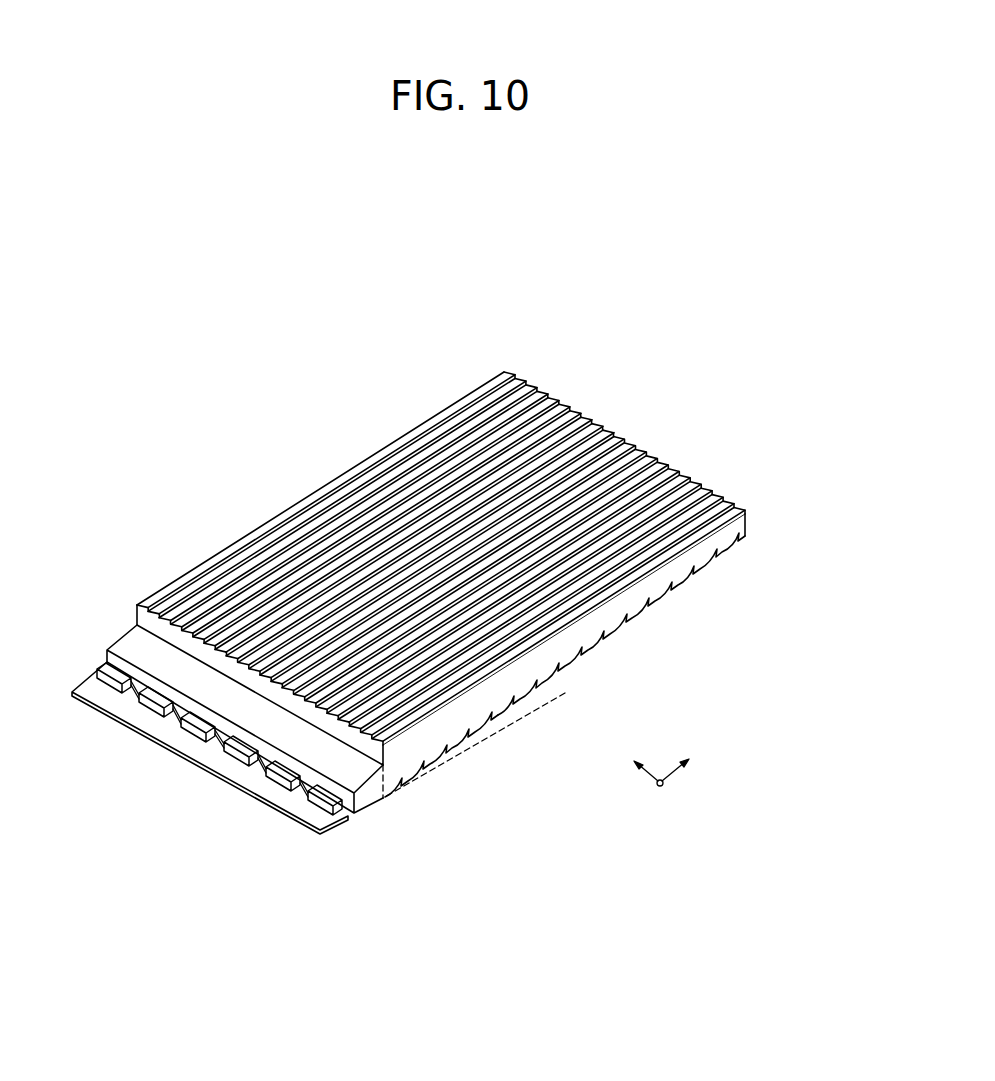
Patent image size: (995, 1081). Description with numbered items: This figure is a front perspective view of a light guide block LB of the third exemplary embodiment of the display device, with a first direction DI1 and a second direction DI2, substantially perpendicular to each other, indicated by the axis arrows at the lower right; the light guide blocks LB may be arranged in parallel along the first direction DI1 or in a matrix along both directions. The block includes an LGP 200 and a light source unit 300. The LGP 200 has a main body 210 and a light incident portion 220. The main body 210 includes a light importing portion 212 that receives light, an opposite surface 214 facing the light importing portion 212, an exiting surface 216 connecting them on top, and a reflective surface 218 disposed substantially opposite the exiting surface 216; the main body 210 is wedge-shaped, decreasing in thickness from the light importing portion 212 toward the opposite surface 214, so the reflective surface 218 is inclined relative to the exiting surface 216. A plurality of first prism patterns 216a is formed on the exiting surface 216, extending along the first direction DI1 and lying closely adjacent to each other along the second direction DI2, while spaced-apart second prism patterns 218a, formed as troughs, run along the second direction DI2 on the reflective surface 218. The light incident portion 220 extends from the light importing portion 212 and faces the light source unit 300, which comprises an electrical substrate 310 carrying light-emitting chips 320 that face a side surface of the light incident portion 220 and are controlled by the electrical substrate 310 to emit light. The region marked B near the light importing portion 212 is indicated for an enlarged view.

The light guide block LB is at (638, 403).
The LGP 200 is at (47, 560).
The main body 210 is at (135, 617).
The light importing portion 212 is at (393, 776).
The opposite surface 214 is at (756, 518).
The exiting surface 216 is at (650, 589).
The first prism pattern 216a is at (356, 496).
The reflective surface 218 is at (608, 652).
The second prism pattern 218a is at (459, 744).
The light incident portion 220 is at (124, 641).
The light source unit 300 is at (245, 884).
The electrical substrate 310 is at (283, 800).
The light-emitting chip 320 is at (316, 802).
The region B is at (400, 811).
The first direction DI1 is at (690, 763).
The second direction DI2 is at (632, 760).